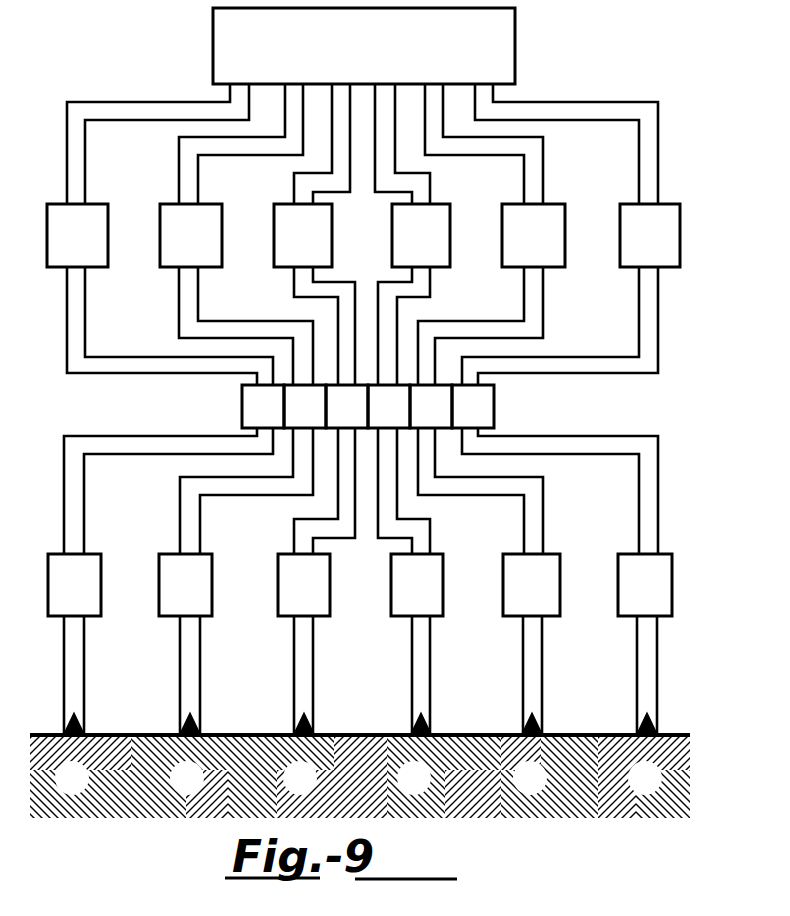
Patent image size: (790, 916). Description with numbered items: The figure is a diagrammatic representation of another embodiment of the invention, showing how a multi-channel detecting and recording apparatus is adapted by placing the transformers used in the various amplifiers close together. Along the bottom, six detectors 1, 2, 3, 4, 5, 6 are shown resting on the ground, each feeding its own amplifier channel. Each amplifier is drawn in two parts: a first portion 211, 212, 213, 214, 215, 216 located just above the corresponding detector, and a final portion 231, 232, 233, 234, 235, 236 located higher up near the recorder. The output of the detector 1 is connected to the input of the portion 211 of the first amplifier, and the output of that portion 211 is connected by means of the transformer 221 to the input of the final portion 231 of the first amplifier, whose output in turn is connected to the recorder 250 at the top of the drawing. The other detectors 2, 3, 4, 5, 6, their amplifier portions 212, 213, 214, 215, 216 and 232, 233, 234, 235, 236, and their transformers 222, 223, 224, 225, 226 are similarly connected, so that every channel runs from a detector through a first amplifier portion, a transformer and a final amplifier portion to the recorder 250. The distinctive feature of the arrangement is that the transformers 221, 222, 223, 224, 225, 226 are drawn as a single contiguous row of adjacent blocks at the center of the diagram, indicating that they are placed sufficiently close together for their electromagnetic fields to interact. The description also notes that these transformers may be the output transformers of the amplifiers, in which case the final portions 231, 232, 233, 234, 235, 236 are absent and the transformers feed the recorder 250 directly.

The recorder 250 is at (364, 46).
The final portion of the first amplifier 231 is at (77, 235).
The final portion of amplifier 232 is at (191, 235).
The final portion of amplifier 233 is at (303, 235).
The final portion of amplifier 234 is at (421, 235).
The final portion of amplifier 235 is at (533, 235).
The final portion of amplifier 236 is at (650, 235).
The transformer 221 is at (263, 406).
The transformer 222 is at (305, 406).
The transformer 223 is at (347, 406).
The transformer 224 is at (389, 406).
The transformer 225 is at (431, 406).
The transformer 226 is at (473, 406).
The portion of the first amplifier 211 is at (74, 585).
The portion of amplifier 212 is at (185, 585).
The portion of amplifier 213 is at (304, 585).
The portion of amplifier 214 is at (417, 585).
The portion of amplifier 215 is at (531, 585).
The portion of amplifier 216 is at (645, 585).
The detector 1 is at (73, 737).
The detector 2 is at (189, 737).
The detector 3 is at (303, 737).
The detector 4 is at (420, 737).
The detector 5 is at (531, 737).
The detector 6 is at (646, 737).